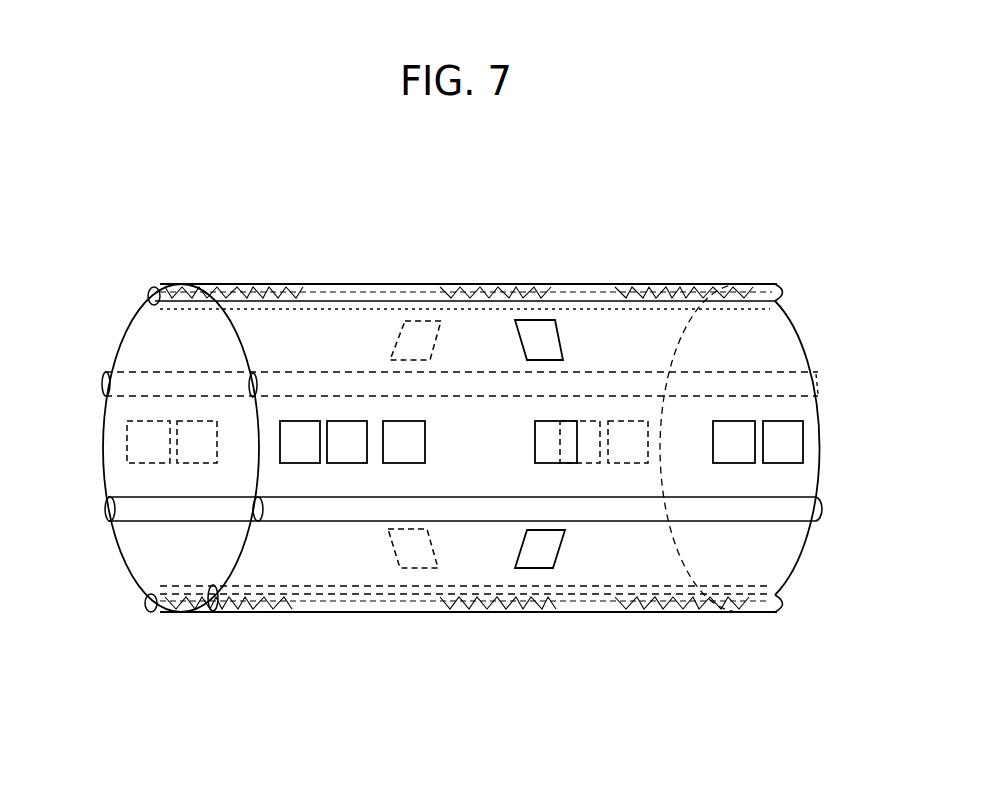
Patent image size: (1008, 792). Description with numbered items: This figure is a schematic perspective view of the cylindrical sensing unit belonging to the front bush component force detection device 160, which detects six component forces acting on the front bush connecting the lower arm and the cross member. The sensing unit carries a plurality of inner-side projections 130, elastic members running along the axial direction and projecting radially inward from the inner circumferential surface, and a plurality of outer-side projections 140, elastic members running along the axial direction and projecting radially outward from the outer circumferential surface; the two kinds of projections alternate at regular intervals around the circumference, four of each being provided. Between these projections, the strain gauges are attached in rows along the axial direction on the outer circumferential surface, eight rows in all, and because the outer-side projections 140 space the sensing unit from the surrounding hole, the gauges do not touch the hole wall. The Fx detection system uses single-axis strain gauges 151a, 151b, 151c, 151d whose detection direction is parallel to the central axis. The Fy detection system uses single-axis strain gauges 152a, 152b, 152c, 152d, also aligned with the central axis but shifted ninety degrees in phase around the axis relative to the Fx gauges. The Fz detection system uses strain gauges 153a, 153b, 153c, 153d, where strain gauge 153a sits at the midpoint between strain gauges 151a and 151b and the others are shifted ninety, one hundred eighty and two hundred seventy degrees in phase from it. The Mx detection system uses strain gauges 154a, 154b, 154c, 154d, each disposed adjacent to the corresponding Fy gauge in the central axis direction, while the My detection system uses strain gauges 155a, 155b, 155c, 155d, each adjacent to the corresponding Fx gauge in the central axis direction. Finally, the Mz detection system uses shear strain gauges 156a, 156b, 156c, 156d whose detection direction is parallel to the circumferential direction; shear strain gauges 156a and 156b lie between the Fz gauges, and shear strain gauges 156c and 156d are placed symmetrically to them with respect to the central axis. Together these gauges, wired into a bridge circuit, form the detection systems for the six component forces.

The front bush component force detection device 160 is at (92, 337).
The inner-side projections 130 is at (253, 387).
The outer-side projections 140 is at (105, 380).
The strain gauge 151a is at (219, 284).
The strain gauge 151b is at (692, 284).
The strain gauge 151c is at (704, 612).
The strain gauge 151d is at (232, 612).
The strain gauge 152a is at (287, 433).
The strain gauge 152b is at (780, 432).
The strain gauge 152c is at (648, 428).
The strain gauge 152d is at (130, 456).
The strain gauge 153a is at (486, 294).
The strain gauge 153b is at (572, 421).
The strain gauge 153c is at (395, 421).
The strain gauge 153d is at (482, 612).
The strain gauge 154a is at (334, 465).
The strain gauge 154b is at (727, 465).
The strain gauge 154c is at (605, 420).
The strain gauge 154d is at (180, 462).
The strain gauge 155a is at (277, 284).
The strain gauge 155b is at (661, 284).
The strain gauge 155c is at (654, 612).
The strain gauge 155d is at (276, 612).
The shear strain gauge 156a is at (540, 320).
The shear strain gauge 156b is at (540, 568).
The shear strain gauge 156c is at (417, 320).
The shear strain gauge 156d is at (404, 568).